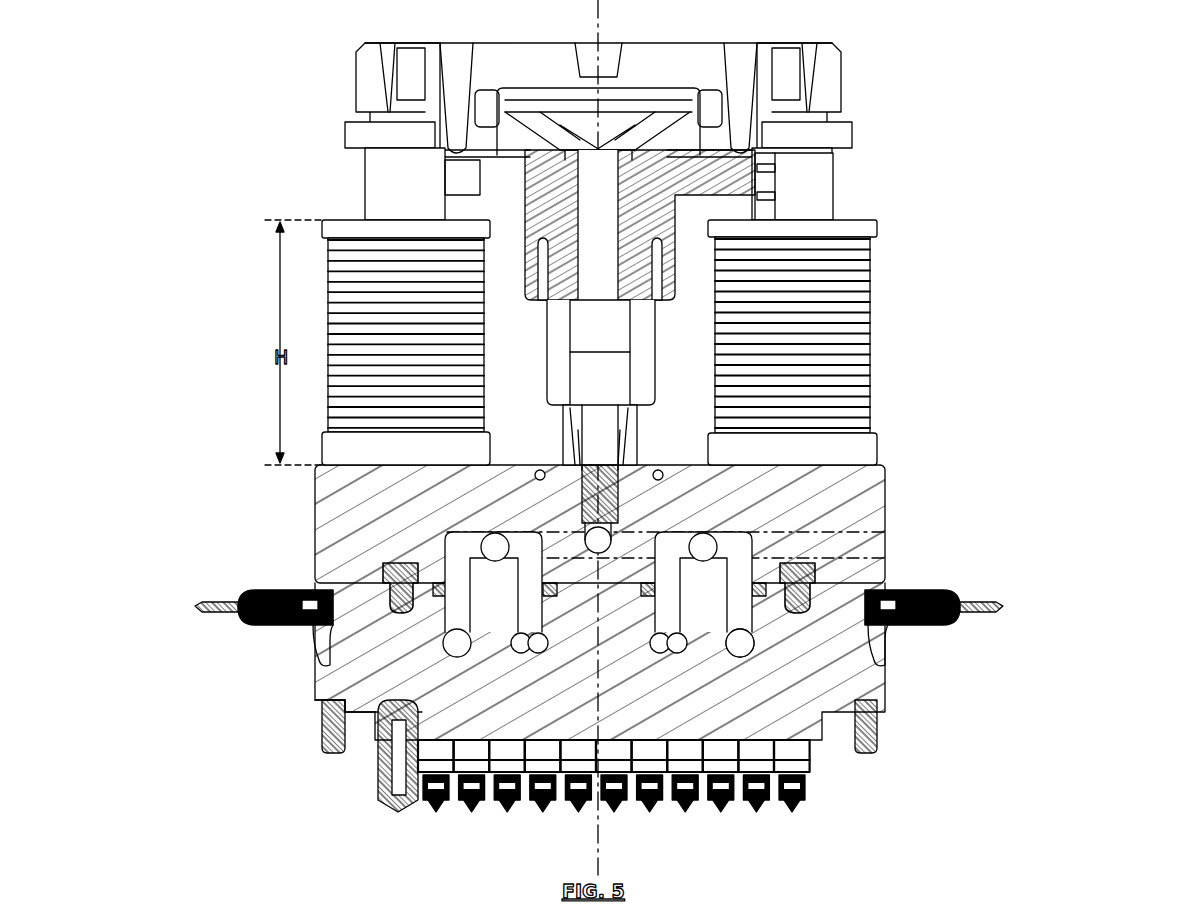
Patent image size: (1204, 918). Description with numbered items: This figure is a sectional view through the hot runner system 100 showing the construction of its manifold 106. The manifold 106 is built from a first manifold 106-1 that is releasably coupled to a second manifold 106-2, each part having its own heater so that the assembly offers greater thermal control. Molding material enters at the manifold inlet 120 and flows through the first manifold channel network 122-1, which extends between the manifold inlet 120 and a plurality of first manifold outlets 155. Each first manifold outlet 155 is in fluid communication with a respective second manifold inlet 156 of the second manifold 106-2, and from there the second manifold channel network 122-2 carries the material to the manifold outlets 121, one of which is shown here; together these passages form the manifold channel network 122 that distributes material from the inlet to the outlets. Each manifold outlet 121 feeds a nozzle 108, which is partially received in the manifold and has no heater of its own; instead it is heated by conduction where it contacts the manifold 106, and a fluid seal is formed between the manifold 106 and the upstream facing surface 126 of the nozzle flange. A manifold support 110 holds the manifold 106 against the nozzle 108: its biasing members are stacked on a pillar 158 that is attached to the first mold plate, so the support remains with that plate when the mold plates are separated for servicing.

The hot runner system 100 is at (222, 456).
The manifold 106 is at (247, 605).
The first manifold 106-1 is at (465, 592).
The second manifold 106-2 is at (312, 658).
The nozzle 108 is at (395, 748).
The manifold support 110 is at (880, 321).
The manifold inlet 120 is at (665, 478).
The manifold outlet 121 is at (335, 712).
The manifold channel network 122 is at (1088, 632).
The first manifold channel network 122-1 is at (707, 543).
The second manifold channel network 122-2 is at (743, 643).
The upstream facing surface 126 is at (430, 732).
The first manifold outlet 155 is at (440, 578).
The second manifold inlet 156 is at (870, 352).
The pillar 158 is at (825, 186).